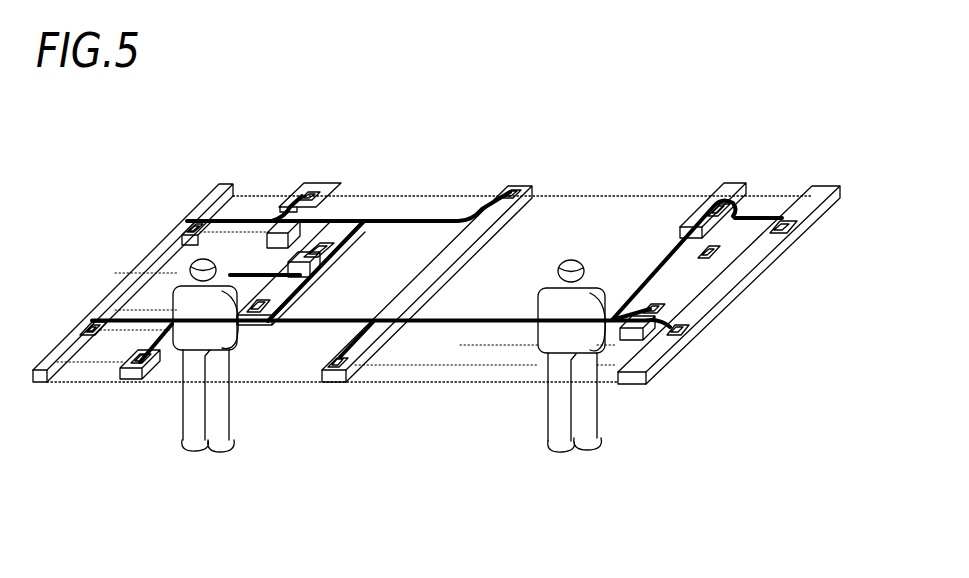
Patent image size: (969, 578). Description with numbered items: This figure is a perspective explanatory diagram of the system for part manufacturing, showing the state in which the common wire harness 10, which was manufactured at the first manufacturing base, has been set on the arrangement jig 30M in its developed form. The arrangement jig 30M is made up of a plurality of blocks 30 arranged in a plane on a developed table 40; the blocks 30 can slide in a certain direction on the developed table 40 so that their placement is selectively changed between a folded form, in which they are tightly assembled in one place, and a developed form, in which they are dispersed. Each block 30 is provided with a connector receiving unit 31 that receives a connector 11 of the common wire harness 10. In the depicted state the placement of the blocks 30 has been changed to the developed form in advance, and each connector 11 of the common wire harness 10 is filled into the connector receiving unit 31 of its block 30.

The common wire harness 10 is at (390, 222).
The connector 11 is at (193, 223).
The block 30 is at (233, 183).
The arrangement jig 30M is at (757, 197).
The connector receiving unit 31 is at (308, 326).
The developed table 40 is at (278, 382).